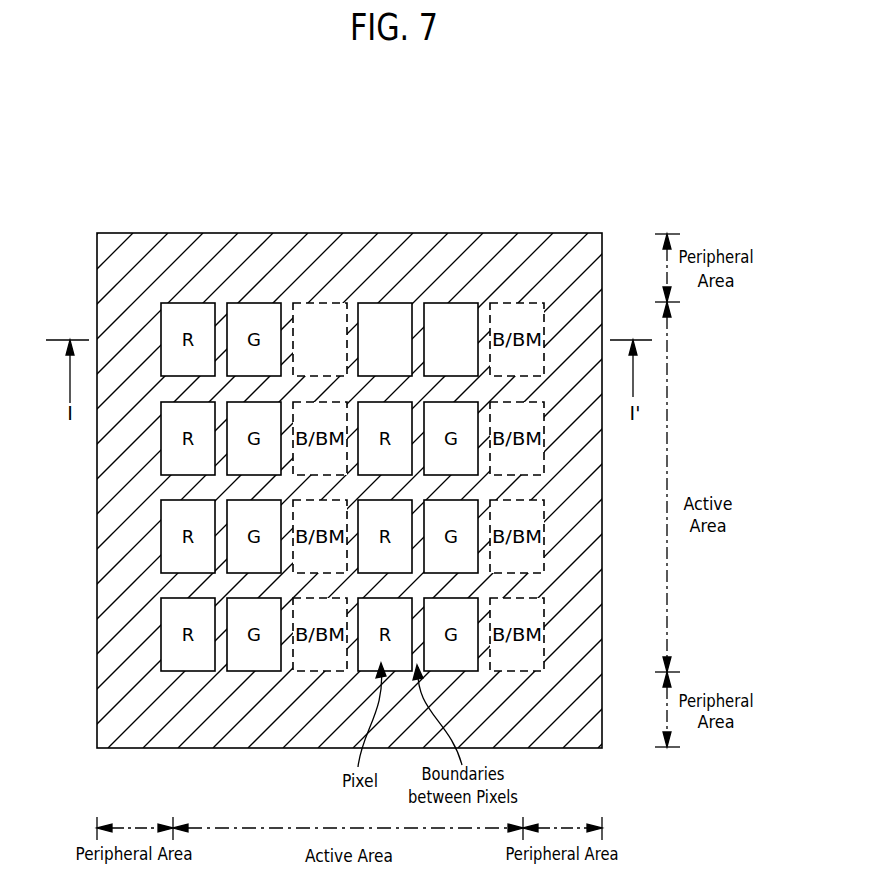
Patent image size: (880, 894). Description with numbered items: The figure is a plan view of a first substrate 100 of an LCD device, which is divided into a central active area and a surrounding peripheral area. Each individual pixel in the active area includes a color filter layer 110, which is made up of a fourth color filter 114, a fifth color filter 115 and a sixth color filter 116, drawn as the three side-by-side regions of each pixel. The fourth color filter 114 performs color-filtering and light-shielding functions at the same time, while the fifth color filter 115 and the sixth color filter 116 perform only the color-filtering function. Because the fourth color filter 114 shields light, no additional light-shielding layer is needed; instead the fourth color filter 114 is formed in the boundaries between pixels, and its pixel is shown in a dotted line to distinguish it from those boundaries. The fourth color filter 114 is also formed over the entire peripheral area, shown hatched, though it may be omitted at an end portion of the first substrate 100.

The first substrate 100 is at (558, 233).
The color filter layer 110 is at (325, 190).
The fourth color filter 114 is at (304, 316).
The fifth color filter 115 is at (395, 313).
The sixth color filter 116 is at (440, 313).